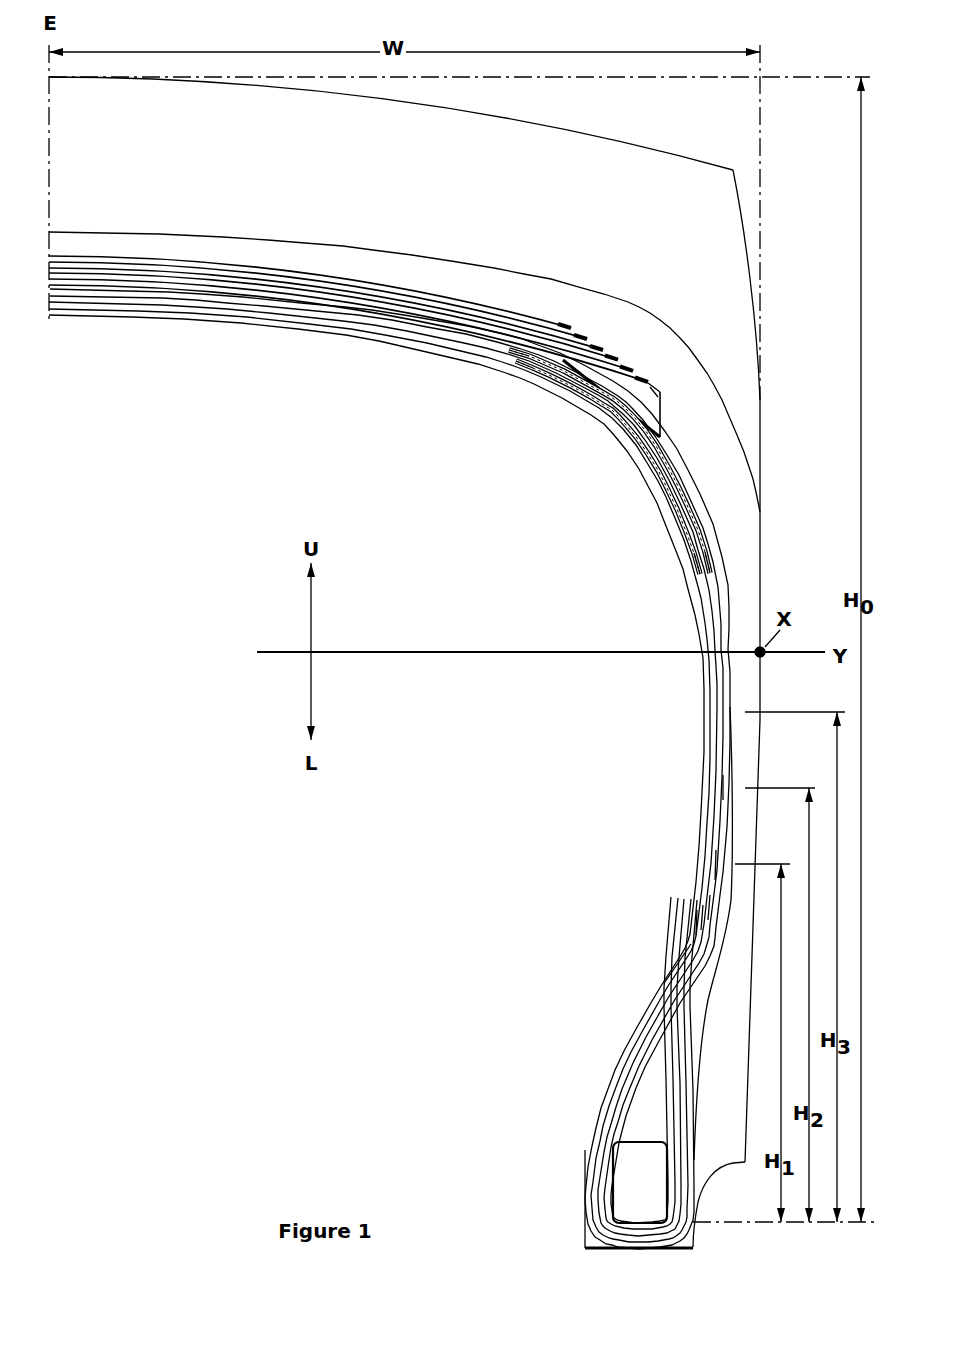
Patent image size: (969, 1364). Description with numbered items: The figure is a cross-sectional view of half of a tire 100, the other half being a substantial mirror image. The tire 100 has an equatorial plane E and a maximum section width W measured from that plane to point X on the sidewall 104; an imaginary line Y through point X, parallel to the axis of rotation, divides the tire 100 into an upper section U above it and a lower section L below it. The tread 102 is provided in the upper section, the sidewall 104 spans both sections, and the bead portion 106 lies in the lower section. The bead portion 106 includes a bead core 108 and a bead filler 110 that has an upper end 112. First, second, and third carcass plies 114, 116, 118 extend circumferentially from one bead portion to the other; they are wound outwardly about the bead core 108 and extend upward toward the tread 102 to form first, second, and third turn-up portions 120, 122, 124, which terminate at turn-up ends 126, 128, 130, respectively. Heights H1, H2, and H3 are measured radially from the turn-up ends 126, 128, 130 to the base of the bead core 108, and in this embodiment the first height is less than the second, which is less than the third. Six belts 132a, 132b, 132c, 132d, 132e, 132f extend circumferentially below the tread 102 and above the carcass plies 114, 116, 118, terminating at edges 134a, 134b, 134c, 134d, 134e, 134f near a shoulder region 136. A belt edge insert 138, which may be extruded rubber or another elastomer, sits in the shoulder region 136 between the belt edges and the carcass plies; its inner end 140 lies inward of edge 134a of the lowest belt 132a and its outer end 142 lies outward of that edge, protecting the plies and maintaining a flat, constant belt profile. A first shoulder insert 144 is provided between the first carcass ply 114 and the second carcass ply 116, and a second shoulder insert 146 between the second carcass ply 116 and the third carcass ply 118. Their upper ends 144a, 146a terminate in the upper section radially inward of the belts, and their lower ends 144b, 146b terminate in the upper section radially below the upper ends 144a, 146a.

The tire 100 is at (789, 404).
The tread 102 is at (563, 127).
The sidewall 104 is at (786, 517).
The bead portion 106 is at (565, 1150).
The bead core 108 is at (640, 1187).
The bead filler 110 is at (657, 1090).
The upper end 112 is at (697, 945).
The first carcass ply 114 is at (217, 310).
The second carcass ply 116 is at (252, 307).
The third carcass ply 118 is at (282, 303).
The first turn-up portion 120 is at (700, 925).
The second turn-up portion 122 is at (712, 920).
The third turn-up portion 124 is at (715, 908).
The turn-up end 126 is at (713, 865).
The turn-up end 128 is at (723, 787).
The turn-up end 130 is at (730, 707).
The belt 132a is at (80, 287).
The belt 132b is at (113, 283).
The belt 132c is at (148, 279).
The belt 132d is at (181, 274).
The belt 132e is at (214, 270).
The belt 132f is at (252, 264).
The edge 134a is at (650, 378).
The edge 134b is at (632, 368).
The edge 134c is at (615, 357).
The edge 134d is at (600, 345).
The edge 134e is at (582, 333).
The edge 134f is at (562, 322).
The shoulder region 136 is at (778, 471).
The belt edge insert 138 is at (657, 392).
The inner end 140 is at (567, 360).
The outer end 142 is at (663, 418).
The first shoulder insert 144 is at (657, 472).
The upper end 144a is at (510, 350).
The lower end 144b is at (700, 575).
The second shoulder insert 146 is at (633, 420).
The upper end 146a is at (527, 363).
The lower end 146b is at (703, 567).